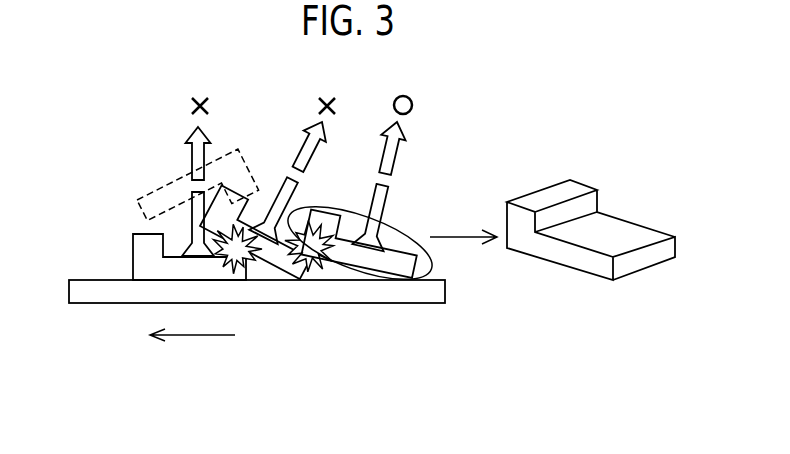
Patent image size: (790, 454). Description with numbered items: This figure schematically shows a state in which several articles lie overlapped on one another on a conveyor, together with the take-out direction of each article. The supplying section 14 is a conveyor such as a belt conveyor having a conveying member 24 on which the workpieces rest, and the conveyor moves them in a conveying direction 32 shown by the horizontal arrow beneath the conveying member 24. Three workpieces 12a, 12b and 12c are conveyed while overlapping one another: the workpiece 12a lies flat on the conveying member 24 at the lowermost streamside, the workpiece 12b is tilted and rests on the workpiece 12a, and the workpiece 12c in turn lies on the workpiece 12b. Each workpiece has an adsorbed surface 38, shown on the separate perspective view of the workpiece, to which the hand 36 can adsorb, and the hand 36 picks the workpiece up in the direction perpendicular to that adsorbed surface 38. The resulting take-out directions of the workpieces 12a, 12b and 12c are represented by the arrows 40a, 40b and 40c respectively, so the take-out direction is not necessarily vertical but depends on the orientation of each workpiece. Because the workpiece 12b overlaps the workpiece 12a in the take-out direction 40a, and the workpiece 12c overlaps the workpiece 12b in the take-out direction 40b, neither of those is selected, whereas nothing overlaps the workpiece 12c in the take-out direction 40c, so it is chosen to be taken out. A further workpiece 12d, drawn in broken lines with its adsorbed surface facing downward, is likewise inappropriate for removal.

The workpiece 12a is at (133, 258).
The workpiece 12b is at (277, 270).
The workpiece 12c is at (418, 272).
The workpiece 12d is at (147, 190).
The supplying section 14 is at (245, 327).
The conveying member 24 is at (90, 305).
The conveying direction 32 is at (190, 335).
The robot hand 36 is at (387, 199).
The adsorbed surface 38 is at (608, 235).
The take-out direction 40a is at (192, 155).
The take-out direction 40b is at (305, 138).
The take-out direction 40c is at (397, 152).